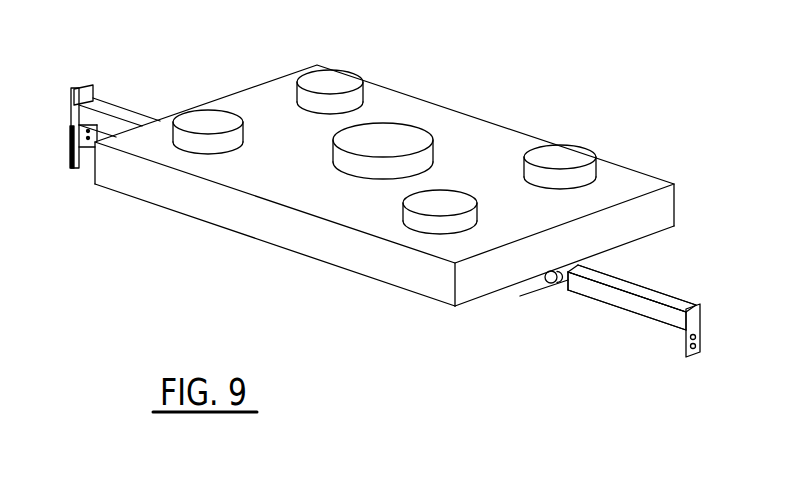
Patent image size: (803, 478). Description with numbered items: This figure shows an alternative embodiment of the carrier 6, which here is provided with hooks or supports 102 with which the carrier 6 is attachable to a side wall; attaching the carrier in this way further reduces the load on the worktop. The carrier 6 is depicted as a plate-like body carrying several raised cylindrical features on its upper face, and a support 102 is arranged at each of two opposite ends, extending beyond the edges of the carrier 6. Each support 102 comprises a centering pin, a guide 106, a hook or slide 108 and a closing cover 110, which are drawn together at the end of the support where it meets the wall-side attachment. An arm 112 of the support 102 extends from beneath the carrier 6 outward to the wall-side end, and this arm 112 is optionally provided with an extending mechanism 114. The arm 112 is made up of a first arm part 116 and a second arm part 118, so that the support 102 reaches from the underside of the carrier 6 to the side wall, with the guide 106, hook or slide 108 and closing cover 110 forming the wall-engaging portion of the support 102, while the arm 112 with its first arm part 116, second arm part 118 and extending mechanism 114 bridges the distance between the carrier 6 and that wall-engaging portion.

The carrier 6 is at (624, 180).
The support 102 is at (697, 318).
The guide 106 is at (72, 173).
The hook/slide 108 is at (60, 110).
The closing cover 110 is at (78, 205).
The arm 112 is at (630, 261).
The extending mechanism 114 is at (530, 300).
The first arm part 116 is at (672, 305).
The second arm part 118 is at (565, 287).